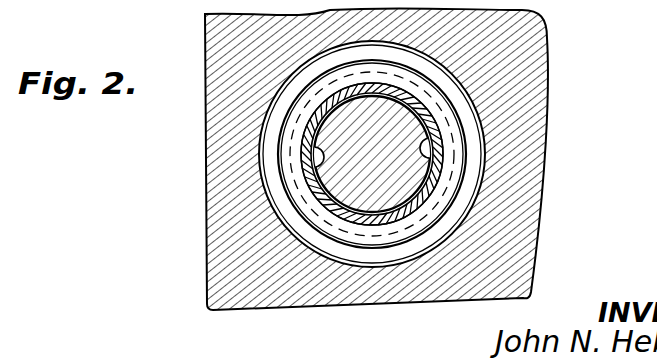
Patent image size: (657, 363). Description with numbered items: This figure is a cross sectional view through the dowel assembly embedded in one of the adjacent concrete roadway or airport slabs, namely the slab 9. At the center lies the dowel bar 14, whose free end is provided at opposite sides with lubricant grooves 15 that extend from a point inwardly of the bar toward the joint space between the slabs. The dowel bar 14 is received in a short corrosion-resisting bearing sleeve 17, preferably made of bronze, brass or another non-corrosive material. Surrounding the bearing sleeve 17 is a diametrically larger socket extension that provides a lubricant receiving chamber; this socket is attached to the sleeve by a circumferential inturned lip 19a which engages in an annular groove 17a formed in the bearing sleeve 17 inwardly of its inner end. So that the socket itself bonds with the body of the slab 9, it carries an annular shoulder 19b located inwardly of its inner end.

The slab 9 is at (527, 175).
The dowel bar 14 is at (405, 128).
The lubricant grooves 15 is at (322, 157).
The bearing sleeve 17 is at (365, 218).
The annular groove 17a is at (435, 178).
The inturned lip 19a is at (403, 220).
The annular shoulder 19b is at (300, 232).